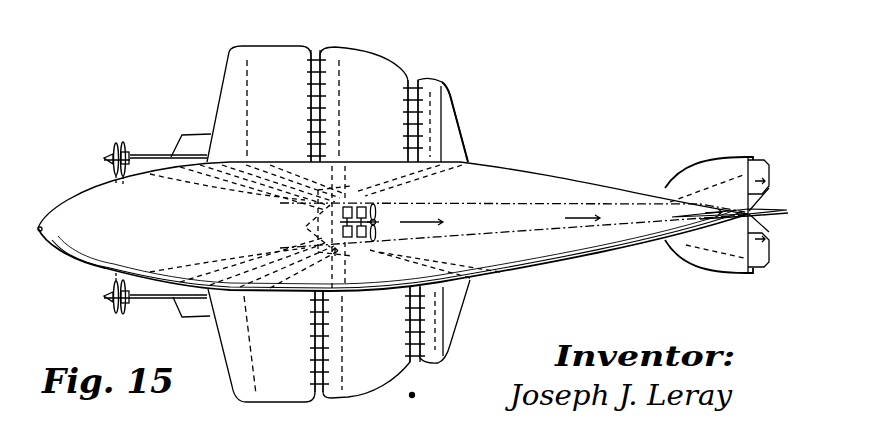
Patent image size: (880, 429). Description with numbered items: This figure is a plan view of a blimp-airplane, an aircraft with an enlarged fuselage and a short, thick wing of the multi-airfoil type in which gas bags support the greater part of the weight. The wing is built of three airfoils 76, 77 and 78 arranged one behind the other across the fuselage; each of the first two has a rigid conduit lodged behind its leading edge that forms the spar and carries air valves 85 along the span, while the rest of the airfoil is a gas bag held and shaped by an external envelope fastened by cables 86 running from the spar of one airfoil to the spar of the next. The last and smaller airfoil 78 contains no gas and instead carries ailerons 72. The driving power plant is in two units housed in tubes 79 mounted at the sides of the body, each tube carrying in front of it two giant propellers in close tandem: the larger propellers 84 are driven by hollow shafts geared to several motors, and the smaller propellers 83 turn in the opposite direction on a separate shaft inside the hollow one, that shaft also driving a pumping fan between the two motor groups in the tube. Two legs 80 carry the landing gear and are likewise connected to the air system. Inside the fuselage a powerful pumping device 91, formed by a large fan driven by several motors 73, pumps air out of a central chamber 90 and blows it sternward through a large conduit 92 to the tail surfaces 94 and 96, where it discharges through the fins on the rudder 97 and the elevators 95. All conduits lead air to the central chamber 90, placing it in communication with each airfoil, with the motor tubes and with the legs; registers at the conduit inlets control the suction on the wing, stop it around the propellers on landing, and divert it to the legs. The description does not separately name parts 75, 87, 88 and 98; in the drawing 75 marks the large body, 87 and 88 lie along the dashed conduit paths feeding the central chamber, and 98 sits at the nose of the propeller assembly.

The ailerons 72 is at (457, 122).
The motors 73 is at (376, 208).
The hull 75 is at (393, 226).
The airfoil 76 is at (261, 224).
The airfoil 77 is at (372, 222).
The airfoil 78 is at (438, 78).
The tubes 79 is at (152, 154).
The legs 80 is at (193, 135).
The smaller propellers 83 is at (115, 145).
The larger propellers 84 is at (125, 143).
The air valves 85 is at (247, 119).
The cables 86 is at (310, 125).
The forward air duct 87 is at (286, 178).
The rear air duct 88 is at (382, 180).
The central chamber 90 is at (347, 222).
The pumping device 91 is at (380, 212).
The large conduit 92 is at (527, 232).
The tail surface 94 is at (700, 164).
The elevators 95 is at (766, 162).
The tail surface 96 is at (766, 210).
The rudder 97 is at (768, 218).
The propeller spinner 98 is at (104, 158).